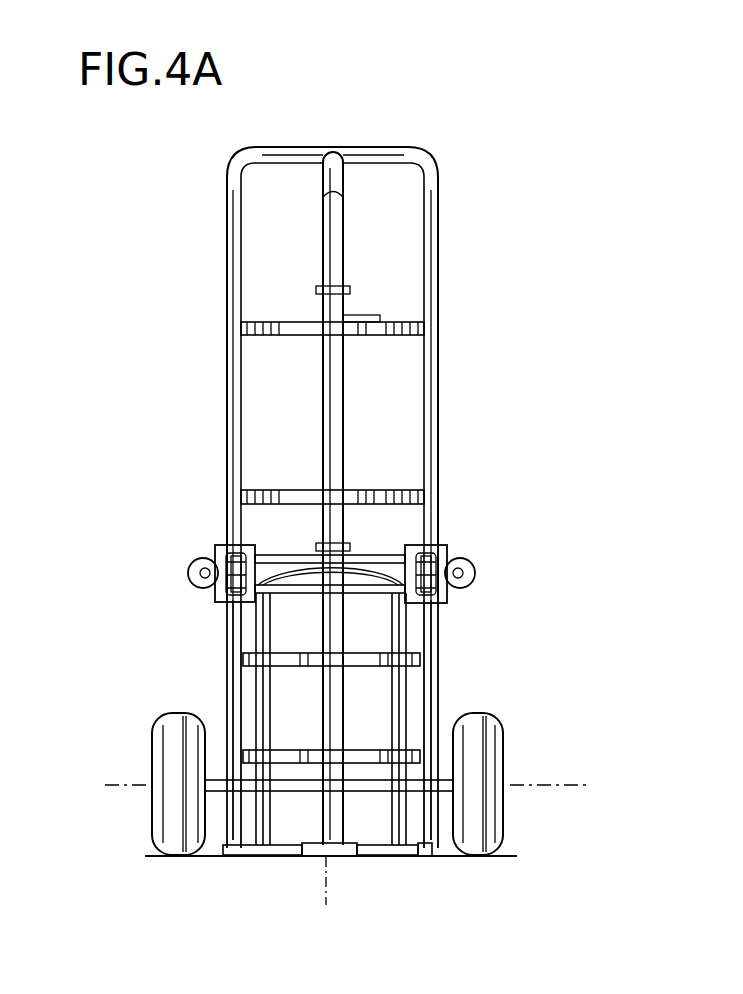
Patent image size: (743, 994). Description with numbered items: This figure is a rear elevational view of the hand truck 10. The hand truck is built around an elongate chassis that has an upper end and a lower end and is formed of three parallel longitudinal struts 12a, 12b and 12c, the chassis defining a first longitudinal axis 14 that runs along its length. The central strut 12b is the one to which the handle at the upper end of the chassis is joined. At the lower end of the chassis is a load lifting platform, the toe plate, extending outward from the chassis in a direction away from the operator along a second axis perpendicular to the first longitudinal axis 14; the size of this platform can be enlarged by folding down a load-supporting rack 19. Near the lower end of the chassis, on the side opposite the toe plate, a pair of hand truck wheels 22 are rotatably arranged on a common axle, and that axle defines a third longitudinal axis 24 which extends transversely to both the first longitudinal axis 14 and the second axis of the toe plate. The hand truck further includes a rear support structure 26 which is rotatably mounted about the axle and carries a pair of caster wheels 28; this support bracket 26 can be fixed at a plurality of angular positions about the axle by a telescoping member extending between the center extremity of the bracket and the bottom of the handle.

The hand truck 10 is at (146, 314).
The longitudinal strut 12a is at (227, 243).
The central strut 12b is at (343, 246).
The longitudinal strut 12c is at (440, 303).
The first longitudinal axis 14 is at (330, 868).
The load-supporting rack 19 is at (400, 637).
The hand truck wheels 22 is at (178, 713).
The third longitudinal axis 24 is at (548, 785).
The rear support structure 26 is at (228, 638).
The caster wheels 28 is at (232, 556).